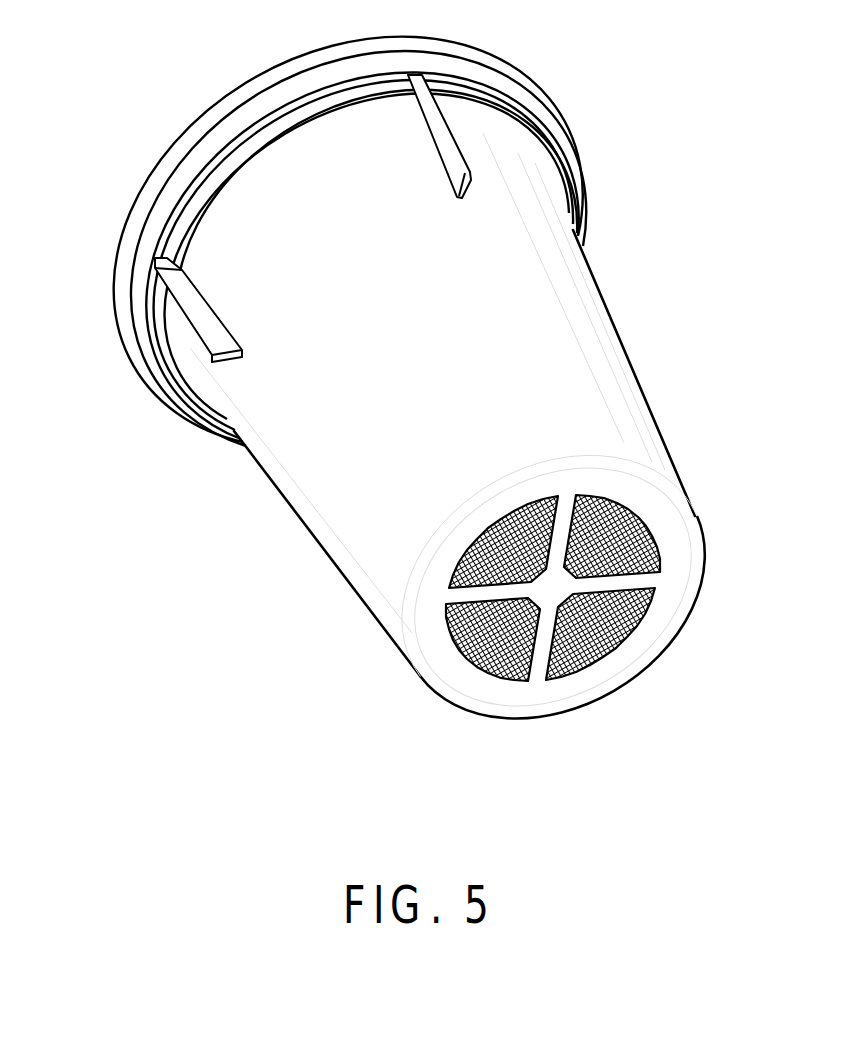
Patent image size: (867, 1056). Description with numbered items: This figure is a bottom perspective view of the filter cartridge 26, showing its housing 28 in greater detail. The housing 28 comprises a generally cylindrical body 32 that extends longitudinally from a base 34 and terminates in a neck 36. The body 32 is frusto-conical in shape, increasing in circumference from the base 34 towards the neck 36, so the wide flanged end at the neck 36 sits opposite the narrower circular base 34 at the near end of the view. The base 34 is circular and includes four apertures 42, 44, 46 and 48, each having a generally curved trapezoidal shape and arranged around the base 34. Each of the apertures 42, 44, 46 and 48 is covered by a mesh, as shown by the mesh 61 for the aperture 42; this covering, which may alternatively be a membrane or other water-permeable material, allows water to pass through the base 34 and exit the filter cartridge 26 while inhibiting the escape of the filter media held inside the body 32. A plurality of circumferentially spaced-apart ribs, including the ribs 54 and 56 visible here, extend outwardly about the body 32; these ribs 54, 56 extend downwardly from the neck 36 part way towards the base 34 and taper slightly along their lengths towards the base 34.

The filter cartridge 26 is at (115, 127).
The housing 28 is at (260, 465).
The body 32 is at (592, 308).
The base 34 is at (675, 588).
The neck 36 is at (508, 72).
The aperture 42 is at (492, 570).
The aperture 44 is at (650, 533).
The aperture 46 is at (492, 570).
The aperture 48 is at (585, 643).
The rib 54 is at (212, 332).
The rib 56 is at (457, 153).
The mesh 61 is at (450, 630).